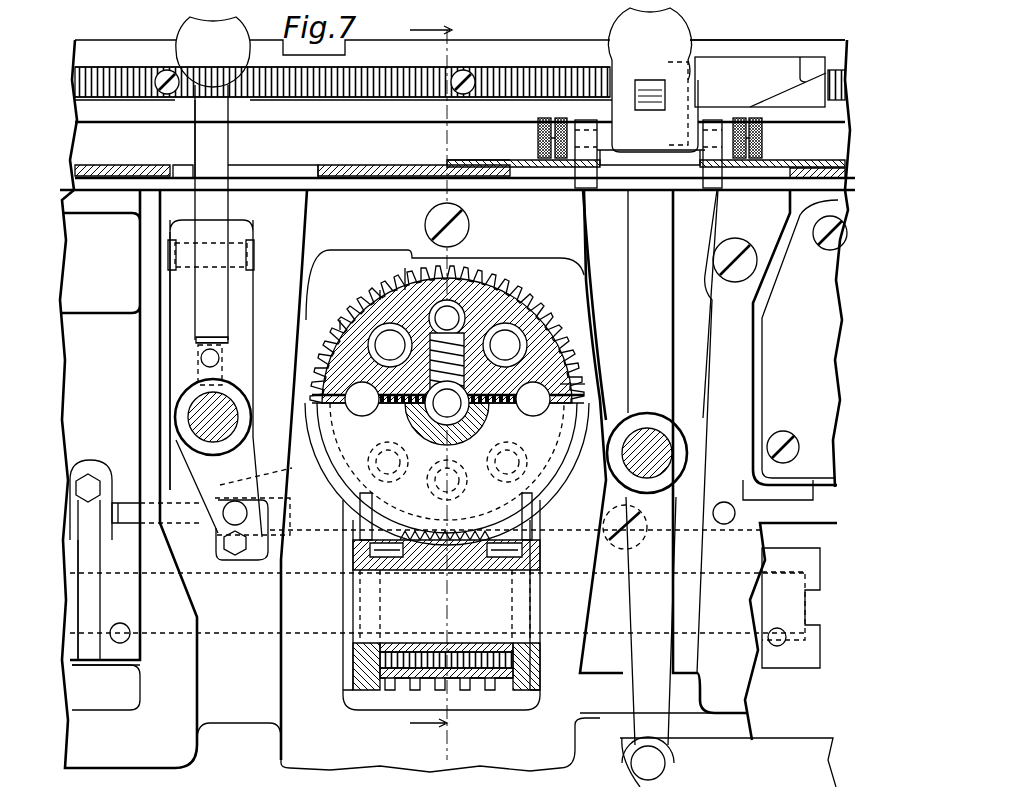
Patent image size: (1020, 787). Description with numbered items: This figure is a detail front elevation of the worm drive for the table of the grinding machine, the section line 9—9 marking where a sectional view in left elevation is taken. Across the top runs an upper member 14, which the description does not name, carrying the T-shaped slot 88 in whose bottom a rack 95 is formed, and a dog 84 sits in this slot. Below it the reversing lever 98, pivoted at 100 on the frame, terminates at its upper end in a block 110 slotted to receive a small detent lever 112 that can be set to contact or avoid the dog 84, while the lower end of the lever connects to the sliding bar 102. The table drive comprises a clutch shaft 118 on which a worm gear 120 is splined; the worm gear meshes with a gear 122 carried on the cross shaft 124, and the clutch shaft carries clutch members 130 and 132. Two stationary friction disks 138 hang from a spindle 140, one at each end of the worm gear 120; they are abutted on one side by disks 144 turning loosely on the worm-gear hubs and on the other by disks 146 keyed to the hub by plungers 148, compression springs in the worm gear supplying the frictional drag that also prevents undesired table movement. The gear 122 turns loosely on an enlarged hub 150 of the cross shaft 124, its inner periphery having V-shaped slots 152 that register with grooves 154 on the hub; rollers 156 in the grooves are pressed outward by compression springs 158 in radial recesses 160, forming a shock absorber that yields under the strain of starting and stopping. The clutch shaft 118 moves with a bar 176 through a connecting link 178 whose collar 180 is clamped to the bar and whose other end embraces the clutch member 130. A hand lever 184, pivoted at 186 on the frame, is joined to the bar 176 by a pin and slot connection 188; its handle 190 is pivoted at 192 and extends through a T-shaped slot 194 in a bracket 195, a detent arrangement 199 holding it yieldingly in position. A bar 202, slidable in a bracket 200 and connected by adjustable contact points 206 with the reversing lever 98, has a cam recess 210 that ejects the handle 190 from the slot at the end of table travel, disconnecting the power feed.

The T-shaped slot 88 is at (90, 85).
The section line 9 is at (431, 378).
The rack 95 is at (522, 65).
The detent lever 112 is at (653, 80).
The frame top 14 is at (745, 40).
The dog 84 is at (770, 82).
The adjustable contact points 206 is at (538, 138).
The block 110 is at (651, 141).
The cam recess 210 is at (190, 176).
The handle 190 is at (228, 140).
The T-shaped slot 194 is at (262, 176).
The bracket 195 is at (352, 168).
The bar 202 is at (400, 178).
The hand lever 184 is at (246, 232).
The pivot 192 is at (256, 250).
The detent arrangement 199 is at (198, 360).
The pivot 186 is at (188, 408).
The pin and slot connection 188 is at (235, 478).
The bar 176 is at (200, 522).
The collar 180 is at (113, 478).
The connecting link 178 is at (90, 604).
The clutch member 130 is at (120, 652).
The bracket 200 is at (472, 221).
The reversing lever 98 is at (635, 215).
The pivot 100 is at (642, 432).
The sliding bar 102 is at (810, 745).
The clutch member 132 is at (800, 668).
The gear 122 is at (470, 310).
The hub 150 is at (525, 330).
The V-shaped slots 152 is at (520, 300).
The cross shaft 124 is at (500, 418).
The grooves 154 is at (405, 268).
The rollers 156 is at (380, 290).
The compression springs 158 is at (340, 320).
The recesses 160 is at (585, 370).
The clutch shaft 118 is at (372, 620).
The spindle 140 is at (446, 512).
The friction disks 138 is at (353, 558).
The plungers 148 is at (495, 553).
The disks 144 is at (353, 684).
The worm gear 120 is at (405, 690).
The disks 146 is at (370, 693).